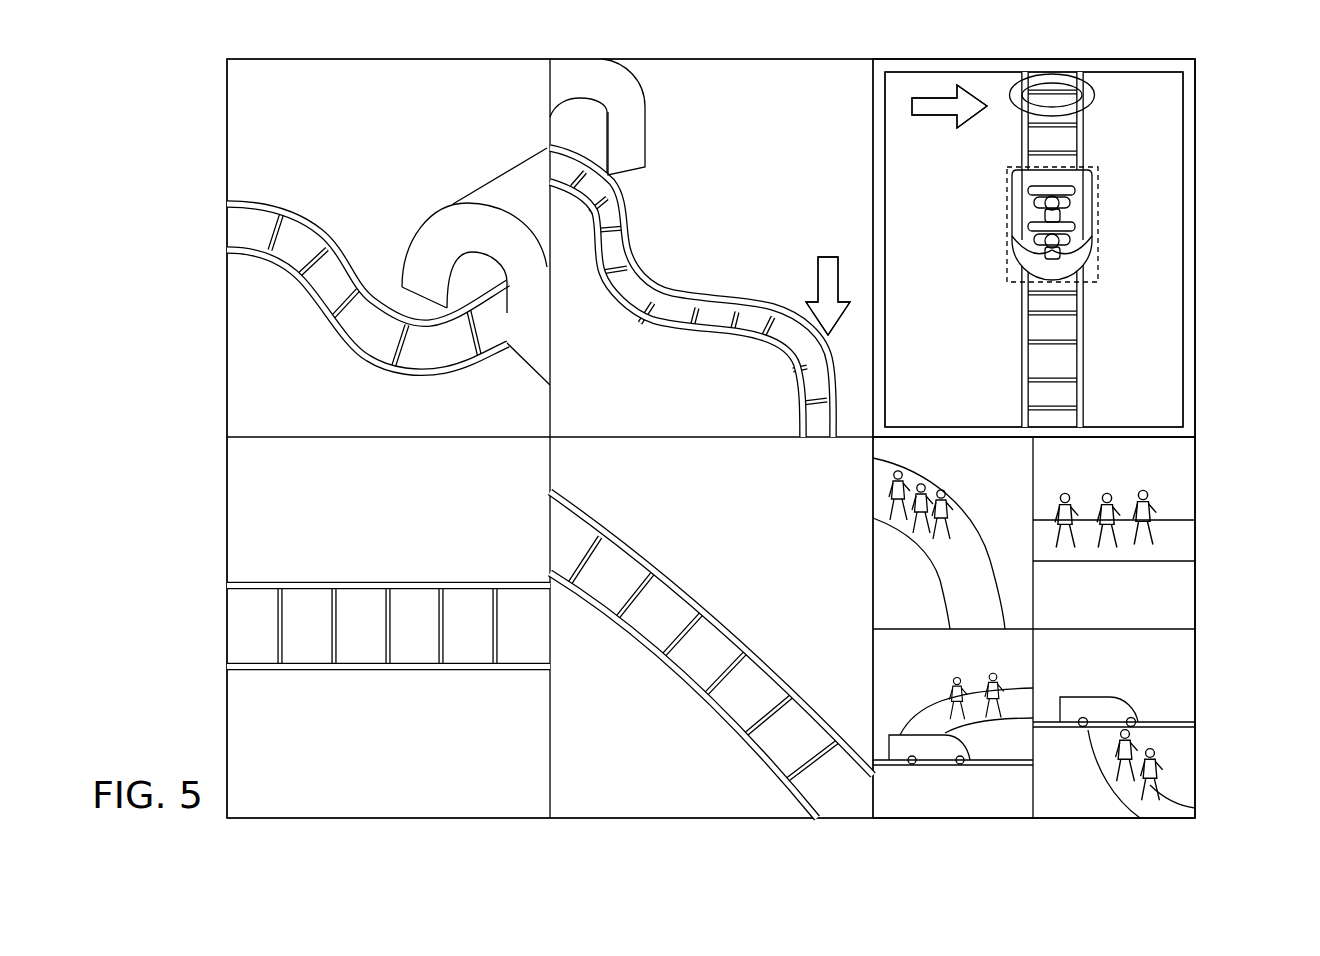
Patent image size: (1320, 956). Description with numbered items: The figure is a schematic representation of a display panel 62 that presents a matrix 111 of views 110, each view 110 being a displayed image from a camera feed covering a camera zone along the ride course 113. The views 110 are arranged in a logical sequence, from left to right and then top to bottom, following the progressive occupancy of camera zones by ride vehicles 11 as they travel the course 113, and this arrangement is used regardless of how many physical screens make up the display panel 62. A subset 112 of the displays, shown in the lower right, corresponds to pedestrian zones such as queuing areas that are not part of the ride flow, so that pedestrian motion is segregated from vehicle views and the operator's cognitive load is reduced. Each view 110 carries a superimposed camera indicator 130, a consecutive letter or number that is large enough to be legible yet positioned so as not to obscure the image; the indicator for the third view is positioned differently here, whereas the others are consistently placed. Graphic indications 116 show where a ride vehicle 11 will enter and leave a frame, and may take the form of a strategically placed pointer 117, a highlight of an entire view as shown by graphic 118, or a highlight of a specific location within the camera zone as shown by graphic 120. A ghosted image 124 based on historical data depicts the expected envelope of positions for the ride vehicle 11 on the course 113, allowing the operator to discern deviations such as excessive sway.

The ride vehicle 11 is at (1098, 257).
The display panel 62 is at (186, 363).
The views 110 is at (227, 323).
The matrix 111 is at (1210, 229).
The subset 112 is at (1205, 429).
The ride track 113 is at (352, 367).
The graphic indications 116 is at (932, 116).
The pointer 117 is at (976, 122).
The graphic 118 is at (1183, 163).
The graphic 120 is at (1087, 106).
The image 124 is at (1007, 255).
The camera indicator 130 is at (516, 98).